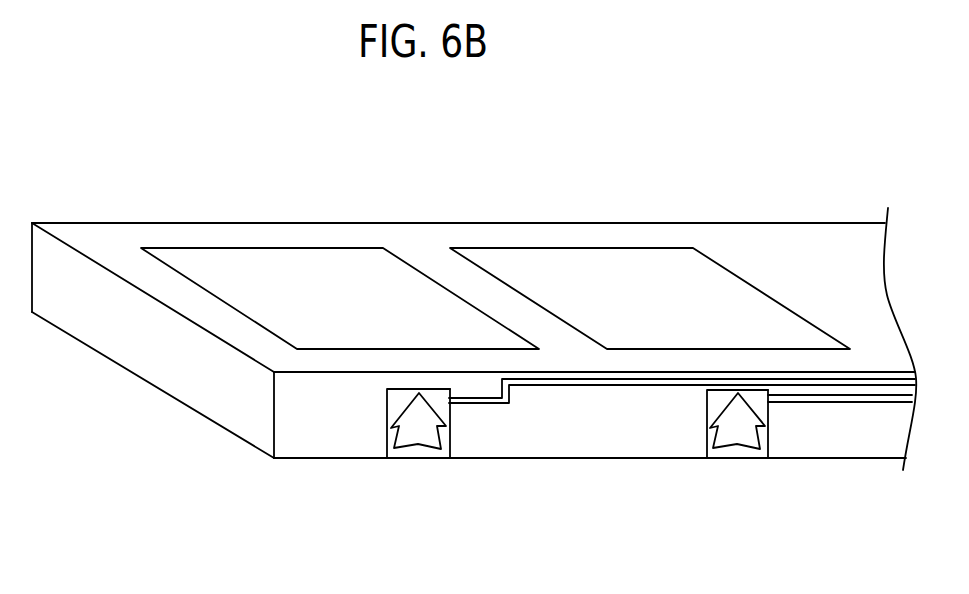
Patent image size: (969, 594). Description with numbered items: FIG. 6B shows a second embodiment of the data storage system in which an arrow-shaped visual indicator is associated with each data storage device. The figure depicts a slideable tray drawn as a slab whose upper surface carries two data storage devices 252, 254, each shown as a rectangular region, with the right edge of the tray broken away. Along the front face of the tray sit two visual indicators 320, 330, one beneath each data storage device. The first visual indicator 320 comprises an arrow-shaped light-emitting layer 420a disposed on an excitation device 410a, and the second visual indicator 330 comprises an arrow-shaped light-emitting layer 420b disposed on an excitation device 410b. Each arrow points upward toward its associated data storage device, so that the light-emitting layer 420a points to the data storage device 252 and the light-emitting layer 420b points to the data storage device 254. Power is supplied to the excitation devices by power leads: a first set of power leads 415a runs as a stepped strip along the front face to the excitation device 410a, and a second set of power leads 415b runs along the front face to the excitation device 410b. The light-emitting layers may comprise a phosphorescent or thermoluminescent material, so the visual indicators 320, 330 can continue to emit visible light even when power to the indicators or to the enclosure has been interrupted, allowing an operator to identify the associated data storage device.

The data storage device 252 is at (352, 307).
The data storage device 254 is at (668, 307).
The visual indicator 320 is at (422, 478).
The visual indicator 330 is at (742, 478).
The excitation device 410a is at (388, 458).
The arrow-shaped light-emitting layer 420a is at (449, 458).
The power leads 415a is at (558, 383).
The excitation device 410b is at (708, 458).
The arrow-shaped light-emitting layer 420b is at (767, 458).
The power leads 415b is at (873, 398).